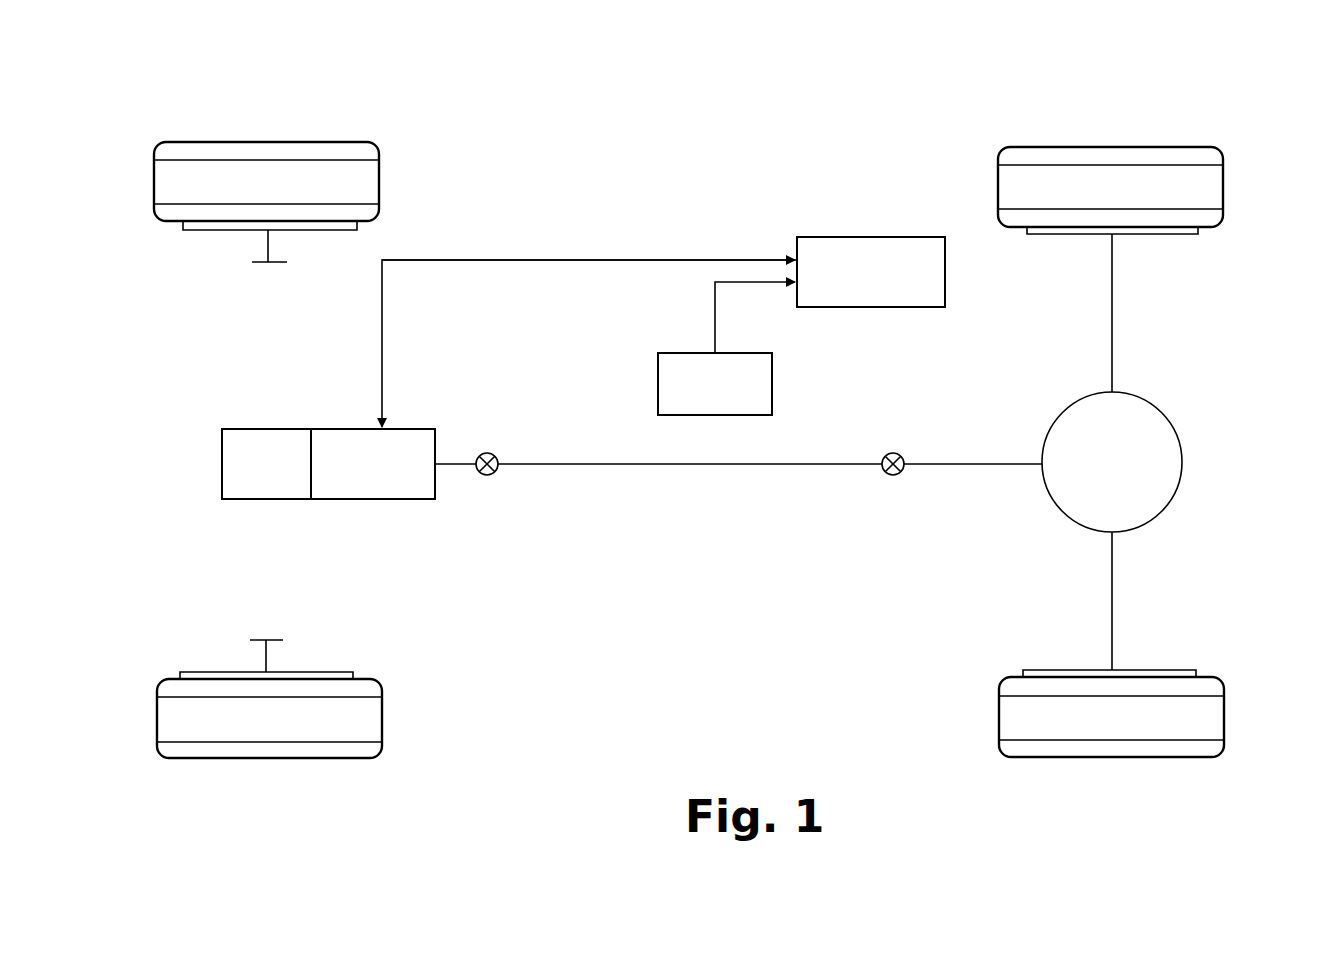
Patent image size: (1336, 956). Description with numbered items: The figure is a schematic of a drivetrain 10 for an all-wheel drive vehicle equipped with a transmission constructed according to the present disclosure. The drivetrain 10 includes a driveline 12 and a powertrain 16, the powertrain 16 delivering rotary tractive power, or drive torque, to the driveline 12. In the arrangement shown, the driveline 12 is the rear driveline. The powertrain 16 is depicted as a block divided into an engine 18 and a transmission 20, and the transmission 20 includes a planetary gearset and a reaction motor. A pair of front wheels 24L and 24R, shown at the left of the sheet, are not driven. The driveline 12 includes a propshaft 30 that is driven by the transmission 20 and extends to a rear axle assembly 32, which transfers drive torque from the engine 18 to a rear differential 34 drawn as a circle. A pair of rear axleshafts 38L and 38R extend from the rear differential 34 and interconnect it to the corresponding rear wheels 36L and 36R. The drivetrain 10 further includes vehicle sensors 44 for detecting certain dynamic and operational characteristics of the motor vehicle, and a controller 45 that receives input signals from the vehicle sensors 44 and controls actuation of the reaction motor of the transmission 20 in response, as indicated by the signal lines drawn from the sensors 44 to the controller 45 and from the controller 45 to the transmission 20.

The drivetrain 10 is at (870, 132).
The driveline 12 is at (791, 493).
The powertrain 16 is at (218, 398).
The engine 18 is at (247, 478).
The transmission 20 is at (357, 478).
The front wheel 24R is at (365, 175).
The front wheel 24L is at (372, 716).
The propshaft 30 is at (645, 465).
The rear axle assembly 32 is at (1138, 378).
The rear differential 34 is at (1182, 463).
The rear wheel 36R is at (1212, 181).
The rear wheel 36L is at (1213, 710).
The rear axleshaft 38R is at (1112, 302).
The rear axleshaft 38L is at (1112, 590).
The vehicle sensors 44 is at (658, 384).
The controller 45 is at (870, 237).